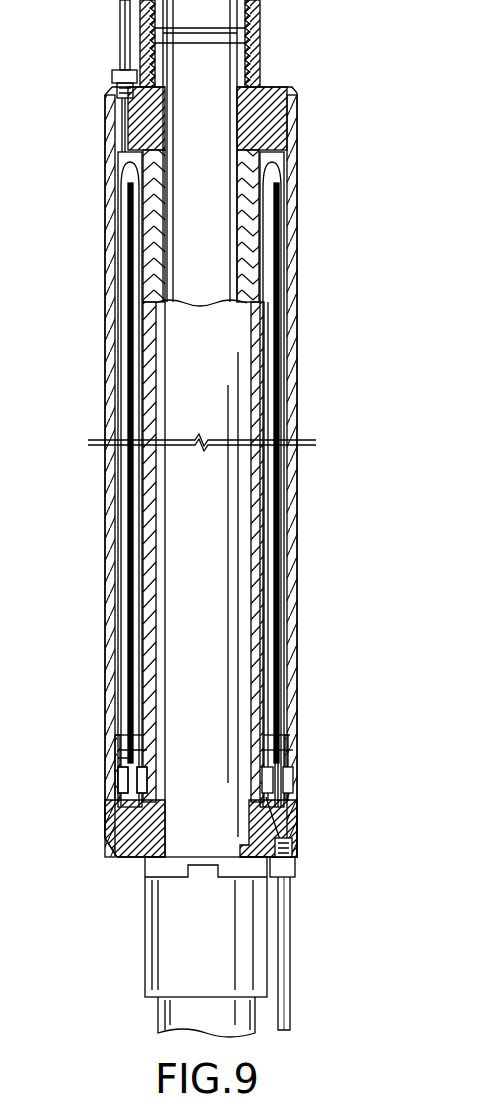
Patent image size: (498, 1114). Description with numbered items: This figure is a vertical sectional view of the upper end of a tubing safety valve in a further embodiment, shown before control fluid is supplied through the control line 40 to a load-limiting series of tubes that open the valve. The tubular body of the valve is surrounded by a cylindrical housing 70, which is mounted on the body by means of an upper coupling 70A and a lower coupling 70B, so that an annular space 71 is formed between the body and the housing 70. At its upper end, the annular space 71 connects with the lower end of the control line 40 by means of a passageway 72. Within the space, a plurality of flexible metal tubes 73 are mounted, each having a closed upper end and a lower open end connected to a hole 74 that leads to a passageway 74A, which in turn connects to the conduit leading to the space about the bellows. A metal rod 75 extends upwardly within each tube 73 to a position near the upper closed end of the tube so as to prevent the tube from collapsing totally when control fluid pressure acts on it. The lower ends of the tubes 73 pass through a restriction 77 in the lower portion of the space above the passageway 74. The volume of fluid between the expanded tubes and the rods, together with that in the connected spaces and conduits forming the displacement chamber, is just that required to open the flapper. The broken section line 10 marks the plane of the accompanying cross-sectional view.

The section line 10- 10 is at (63, 552).
The control line 40 is at (118, 22).
The cylindrical housing 70 is at (298, 208).
The coupling 70A is at (242, 42).
The coupling 70B is at (146, 946).
The annular space 71 is at (128, 172).
The passageway 72 is at (122, 125).
The flexible metal tube 73 is at (285, 398).
The hole 74 is at (113, 750).
The passageway 74A is at (288, 817).
The metal rod 75 is at (273, 287).
The restriction 77 is at (272, 755).